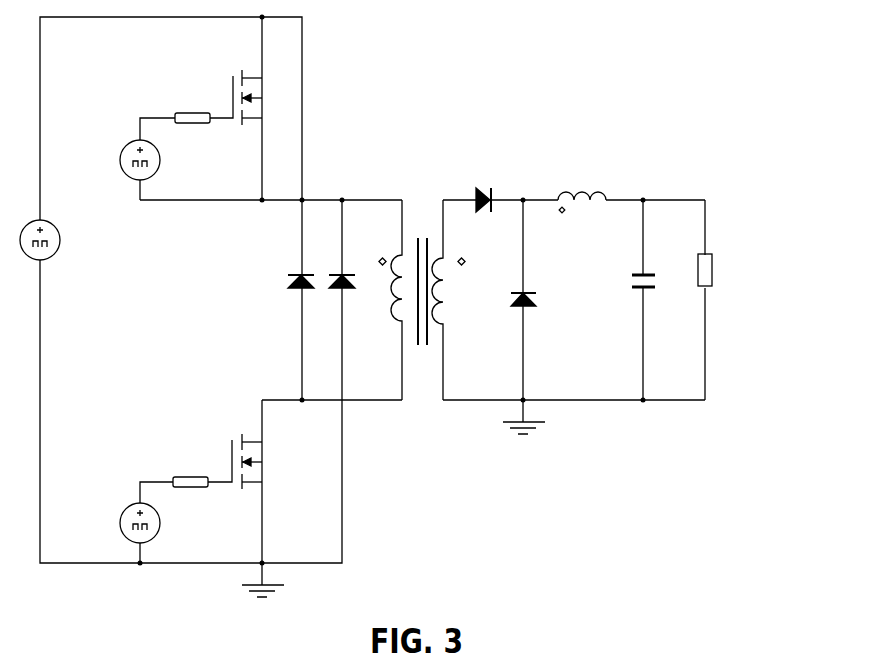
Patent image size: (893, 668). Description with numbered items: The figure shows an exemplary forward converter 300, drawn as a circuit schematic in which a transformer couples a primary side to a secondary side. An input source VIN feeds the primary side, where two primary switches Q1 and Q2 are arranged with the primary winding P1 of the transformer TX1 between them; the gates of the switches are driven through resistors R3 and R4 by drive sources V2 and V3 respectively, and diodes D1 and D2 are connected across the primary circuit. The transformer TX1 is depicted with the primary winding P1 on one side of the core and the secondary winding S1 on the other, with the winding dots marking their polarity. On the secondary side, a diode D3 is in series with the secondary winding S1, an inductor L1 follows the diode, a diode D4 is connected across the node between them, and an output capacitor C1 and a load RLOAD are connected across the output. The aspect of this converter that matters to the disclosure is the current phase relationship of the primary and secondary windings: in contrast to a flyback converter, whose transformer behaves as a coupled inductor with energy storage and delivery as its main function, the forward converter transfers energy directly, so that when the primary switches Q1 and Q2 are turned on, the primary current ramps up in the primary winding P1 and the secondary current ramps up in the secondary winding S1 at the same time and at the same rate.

The forward converter 300 is at (397, 306).
The gate resistor R3 is at (192, 128).
The primary switch Q1 is at (246, 107).
The gate drive voltage source V2 is at (148, 161).
The input voltage source VIN is at (53, 232).
The gate resistor R4 is at (190, 492).
The primary switch Q2 is at (245, 470).
The gate drive voltage source V3 is at (147, 523).
The clamp diode D1 is at (289, 276).
The clamp diode D2 is at (336, 292).
The transformer TX1 is at (426, 300).
The primary winding P1 is at (383, 300).
The secondary winding S1 is at (449, 300).
The rectifier diode D3 is at (482, 192).
The output inductor L1 is at (582, 213).
The freewheeling diode D4 is at (510, 294).
The output capacitor C1 is at (652, 276).
The load resistor RLOAD is at (736, 262).